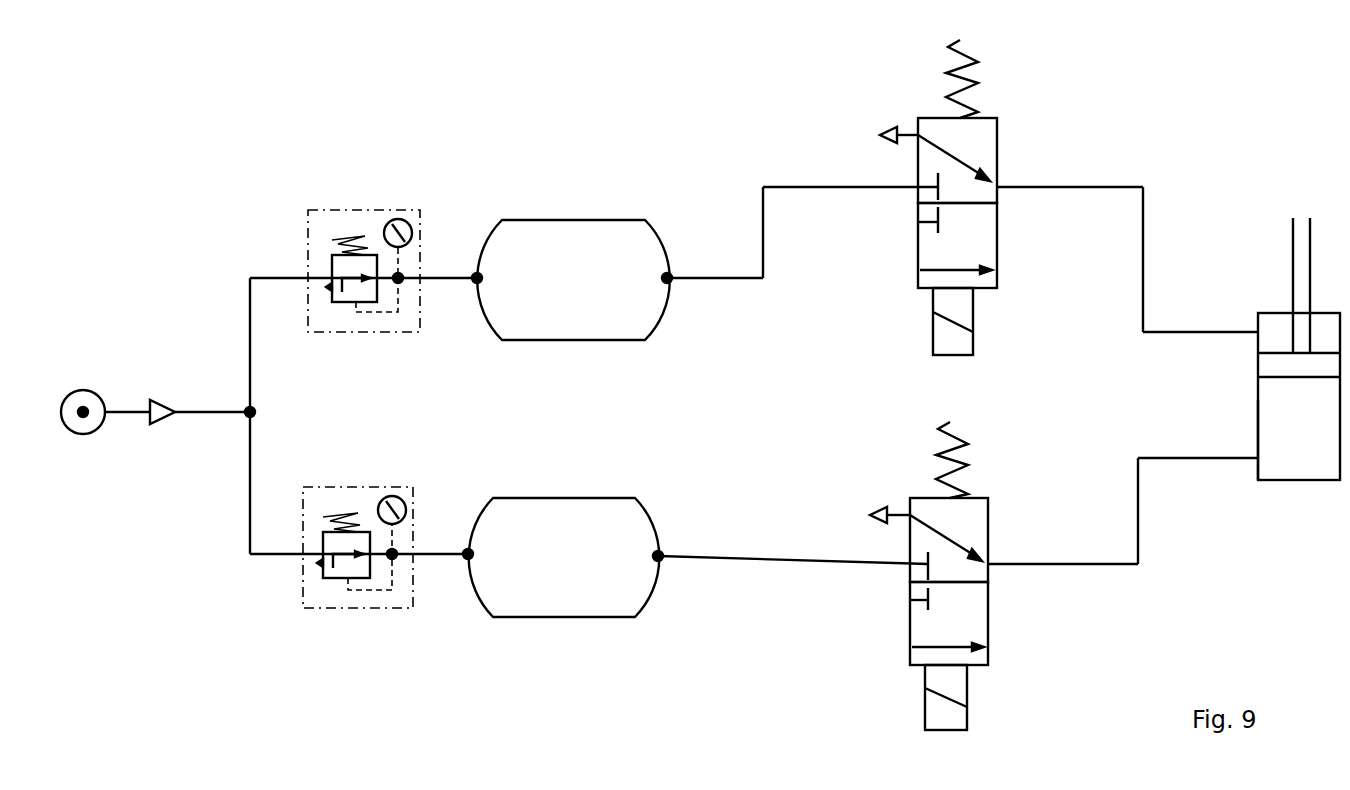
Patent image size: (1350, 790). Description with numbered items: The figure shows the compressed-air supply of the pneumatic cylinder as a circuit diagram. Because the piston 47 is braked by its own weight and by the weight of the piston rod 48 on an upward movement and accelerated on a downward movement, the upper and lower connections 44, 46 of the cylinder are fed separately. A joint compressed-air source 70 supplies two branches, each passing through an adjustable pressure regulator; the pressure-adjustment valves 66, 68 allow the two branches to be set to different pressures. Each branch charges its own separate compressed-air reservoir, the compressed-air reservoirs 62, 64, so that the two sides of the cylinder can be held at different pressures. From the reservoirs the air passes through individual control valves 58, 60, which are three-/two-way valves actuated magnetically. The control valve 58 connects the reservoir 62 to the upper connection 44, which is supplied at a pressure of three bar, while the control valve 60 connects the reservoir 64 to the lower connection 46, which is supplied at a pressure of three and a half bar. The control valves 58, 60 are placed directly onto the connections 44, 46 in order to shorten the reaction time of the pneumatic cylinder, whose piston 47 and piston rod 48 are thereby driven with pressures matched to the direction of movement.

The compressed-air source 70 is at (80, 390).
The pressure-adjustment valve 66 is at (358, 207).
The compressed-air reservoir 62 is at (557, 247).
The pressure-adjustment valve 68 is at (340, 608).
The compressed-air reservoir 64 is at (517, 605).
The control valve 58 is at (920, 245).
The control valve 60 is at (917, 618).
The connection 44 is at (1269, 379).
The connection 46 is at (1226, 453).
The piston 47 is at (1272, 363).
The piston rod 48 is at (1303, 270).